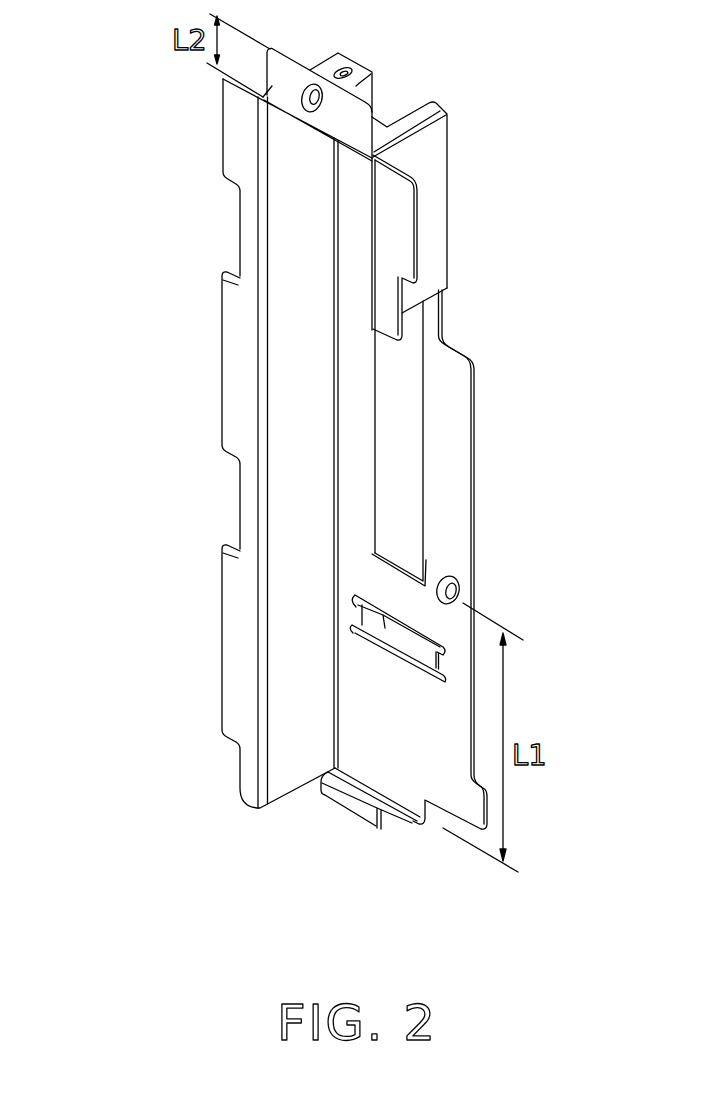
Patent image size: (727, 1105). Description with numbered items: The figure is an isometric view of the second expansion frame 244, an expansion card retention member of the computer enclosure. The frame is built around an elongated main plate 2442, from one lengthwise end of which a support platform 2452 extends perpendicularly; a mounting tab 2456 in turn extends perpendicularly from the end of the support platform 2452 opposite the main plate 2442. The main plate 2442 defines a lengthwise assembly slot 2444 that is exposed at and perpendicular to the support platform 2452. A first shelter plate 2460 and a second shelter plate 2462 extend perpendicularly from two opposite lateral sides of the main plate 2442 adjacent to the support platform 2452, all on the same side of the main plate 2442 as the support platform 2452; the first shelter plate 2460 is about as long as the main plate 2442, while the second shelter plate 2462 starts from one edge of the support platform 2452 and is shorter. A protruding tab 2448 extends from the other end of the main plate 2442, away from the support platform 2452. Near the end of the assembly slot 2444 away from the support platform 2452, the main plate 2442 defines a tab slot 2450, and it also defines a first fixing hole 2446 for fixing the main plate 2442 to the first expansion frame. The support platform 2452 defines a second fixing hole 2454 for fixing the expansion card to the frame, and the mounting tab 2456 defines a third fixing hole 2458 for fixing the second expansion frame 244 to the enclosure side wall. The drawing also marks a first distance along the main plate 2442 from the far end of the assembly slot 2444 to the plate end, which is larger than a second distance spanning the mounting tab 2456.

The second expansion frame 244 is at (196, 209).
The main plate 2442 is at (448, 497).
The assembly slot 2444 is at (402, 410).
The first fixing hole 2446 is at (453, 587).
The protruding tab 2448 is at (343, 805).
The tab slot 2450 is at (397, 627).
The support platform 2452 is at (417, 108).
The second fixing hole 2454 is at (343, 72).
The mounting tab 2456 is at (263, 97).
The third fixing hole 2458 is at (315, 97).
The first shelter plate 2460 is at (300, 302).
The second shelter plate 2462 is at (430, 213).